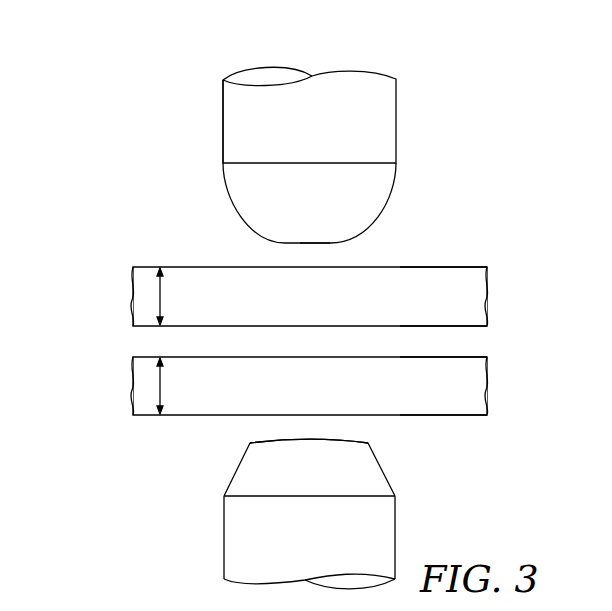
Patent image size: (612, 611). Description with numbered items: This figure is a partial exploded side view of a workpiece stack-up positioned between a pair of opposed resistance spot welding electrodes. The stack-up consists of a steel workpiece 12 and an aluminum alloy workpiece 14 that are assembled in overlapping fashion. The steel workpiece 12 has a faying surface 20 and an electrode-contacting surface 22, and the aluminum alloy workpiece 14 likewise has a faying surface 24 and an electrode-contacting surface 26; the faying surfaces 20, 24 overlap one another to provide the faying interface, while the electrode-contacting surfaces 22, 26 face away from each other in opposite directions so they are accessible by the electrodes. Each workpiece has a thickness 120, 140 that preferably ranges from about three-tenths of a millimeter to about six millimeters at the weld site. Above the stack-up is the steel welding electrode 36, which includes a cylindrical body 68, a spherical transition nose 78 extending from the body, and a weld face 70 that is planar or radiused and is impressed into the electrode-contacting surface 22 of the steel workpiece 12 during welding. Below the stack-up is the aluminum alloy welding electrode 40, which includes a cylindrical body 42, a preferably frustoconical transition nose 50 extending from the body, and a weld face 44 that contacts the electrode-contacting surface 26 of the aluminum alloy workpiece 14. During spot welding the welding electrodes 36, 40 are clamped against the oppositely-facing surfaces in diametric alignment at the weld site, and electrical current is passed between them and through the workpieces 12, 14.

The steel workpiece 12 is at (318, 281).
The aluminum alloy workpiece 14 is at (309, 402).
The faying surface 20 is at (474, 327).
The electrode-contacting surface 22 is at (447, 267).
The faying surface 24 is at (435, 357).
The electrode-contacting surface 26 is at (435, 415).
The steel welding electrode 36 is at (319, 163).
The aluminum alloy welding electrode 40 is at (322, 505).
The body 42 is at (242, 536).
The weld face 44 is at (277, 432).
The transition nose 50 is at (367, 470).
The body 68 is at (237, 132).
The weld face 70 is at (322, 245).
The transition nose 78 is at (255, 192).
The thickness 120 is at (155, 295).
The thickness 140 is at (155, 385).